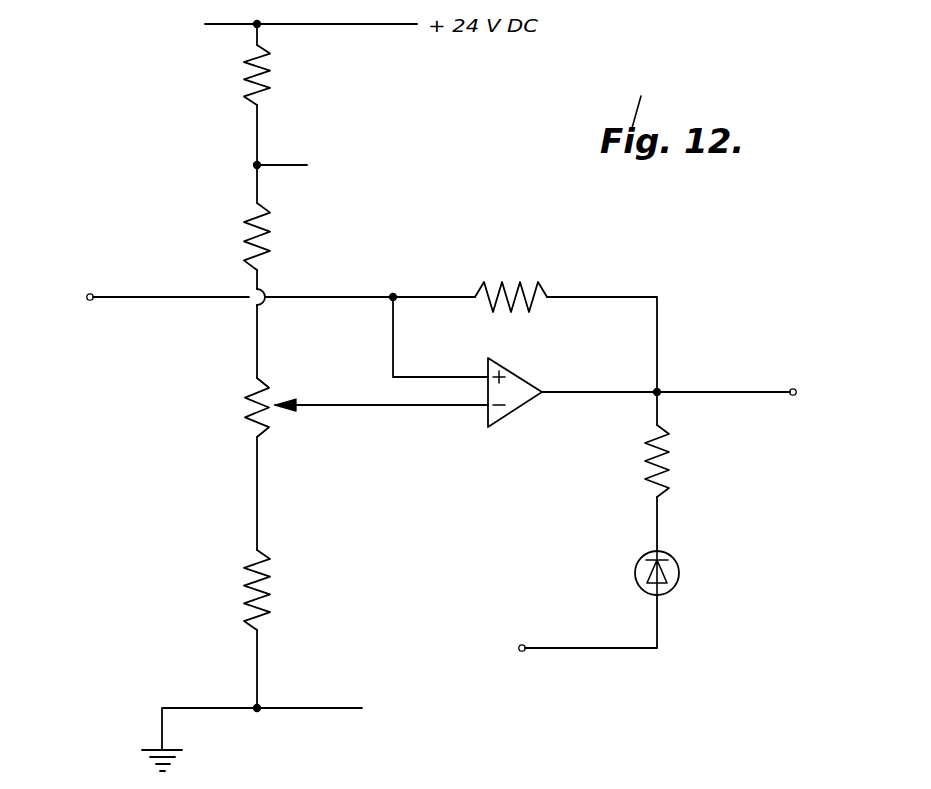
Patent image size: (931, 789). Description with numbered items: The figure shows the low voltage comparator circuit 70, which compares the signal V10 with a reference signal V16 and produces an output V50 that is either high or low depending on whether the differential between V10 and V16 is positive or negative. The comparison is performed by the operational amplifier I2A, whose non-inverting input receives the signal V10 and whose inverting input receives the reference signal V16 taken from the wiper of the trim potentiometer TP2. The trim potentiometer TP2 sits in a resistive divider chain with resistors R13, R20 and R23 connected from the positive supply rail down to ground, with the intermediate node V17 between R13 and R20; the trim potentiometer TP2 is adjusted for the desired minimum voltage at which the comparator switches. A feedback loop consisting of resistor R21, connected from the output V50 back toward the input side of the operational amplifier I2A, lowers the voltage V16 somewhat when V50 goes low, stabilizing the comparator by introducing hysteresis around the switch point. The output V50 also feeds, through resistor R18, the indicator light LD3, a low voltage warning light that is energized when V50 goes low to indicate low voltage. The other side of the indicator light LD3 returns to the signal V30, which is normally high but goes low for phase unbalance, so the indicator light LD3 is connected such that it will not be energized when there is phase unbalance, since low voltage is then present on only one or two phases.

The comparator circuit 70 is at (183, 452).
The resistor R13 is at (280, 75).
The resistor R20 is at (282, 236).
The resistor R23 is at (280, 590).
The feedback resistor R21 is at (511, 280).
The resistor R18 is at (682, 461).
The trim potentiometer TP2 is at (234, 407).
The operational amplifier I2A is at (521, 402).
The indicator light LD3 is at (689, 573).
The signal V10 is at (72, 297).
The voltage node V17 is at (301, 168).
The reference signal V16 is at (368, 404).
The output V50 is at (815, 395).
The phase unbalance signal V30 is at (506, 655).